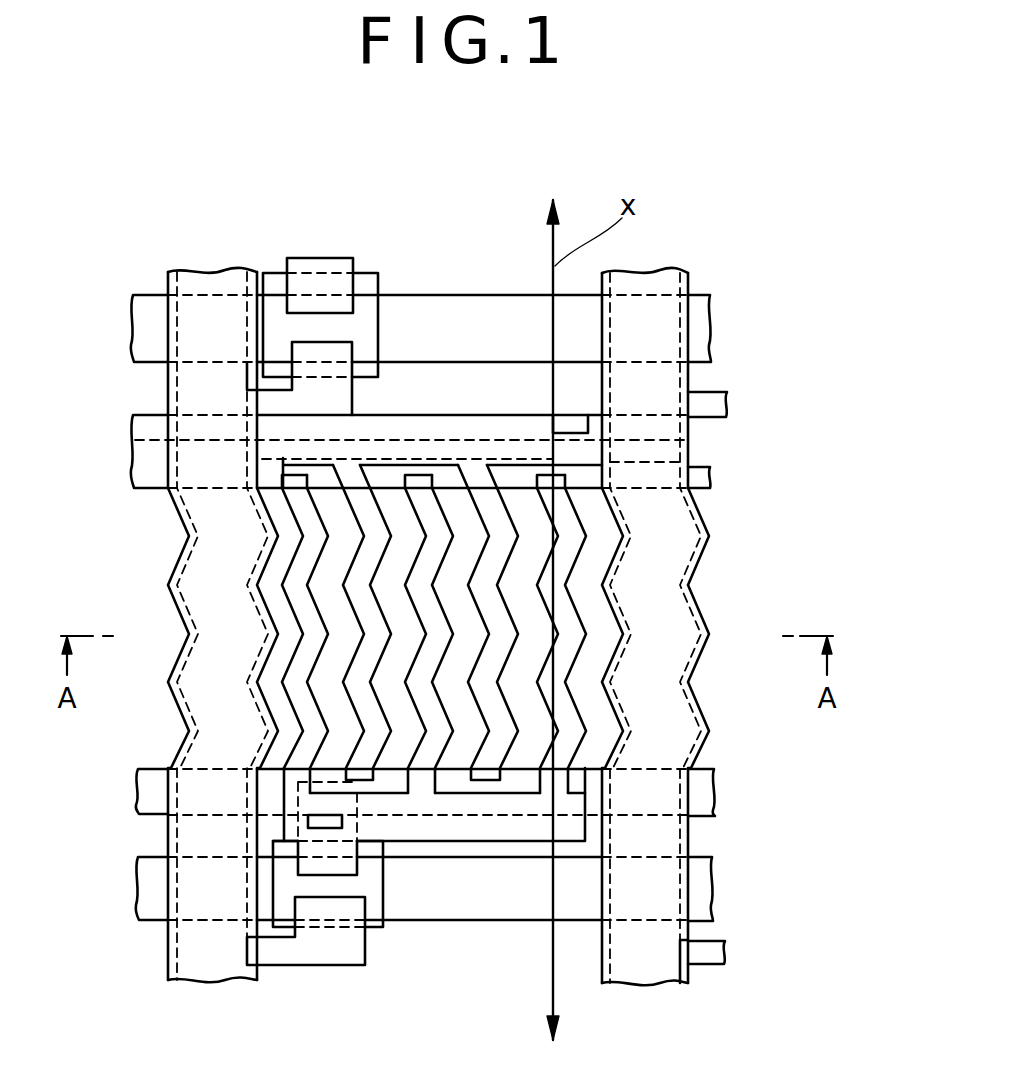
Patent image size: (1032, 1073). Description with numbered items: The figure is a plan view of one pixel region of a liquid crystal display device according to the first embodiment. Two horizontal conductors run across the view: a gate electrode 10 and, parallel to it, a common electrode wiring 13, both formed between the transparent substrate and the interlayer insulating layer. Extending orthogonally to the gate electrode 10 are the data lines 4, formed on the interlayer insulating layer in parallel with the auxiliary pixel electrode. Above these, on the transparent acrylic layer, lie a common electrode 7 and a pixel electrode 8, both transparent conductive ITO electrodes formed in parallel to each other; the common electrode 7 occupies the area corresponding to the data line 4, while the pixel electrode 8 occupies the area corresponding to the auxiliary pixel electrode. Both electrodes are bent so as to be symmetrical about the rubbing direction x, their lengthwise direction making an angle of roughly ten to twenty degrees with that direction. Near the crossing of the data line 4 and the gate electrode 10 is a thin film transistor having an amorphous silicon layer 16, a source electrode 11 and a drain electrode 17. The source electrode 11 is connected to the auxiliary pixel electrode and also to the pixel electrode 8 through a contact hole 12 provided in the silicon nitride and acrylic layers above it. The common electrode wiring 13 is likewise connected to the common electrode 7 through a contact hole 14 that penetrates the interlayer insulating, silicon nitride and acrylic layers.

The data line 4 is at (200, 555).
The common electrode 7 is at (500, 663).
The pixel electrode 8 is at (565, 555).
The gate electrode 10 is at (700, 338).
The source electrode 11 is at (310, 292).
The contact hole 12 is at (320, 820).
The common electrode wiring 13 is at (703, 473).
The contact hole 14 is at (578, 423).
The amorphous silicon layer 16 is at (362, 305).
The drain electrode 17 is at (342, 395).